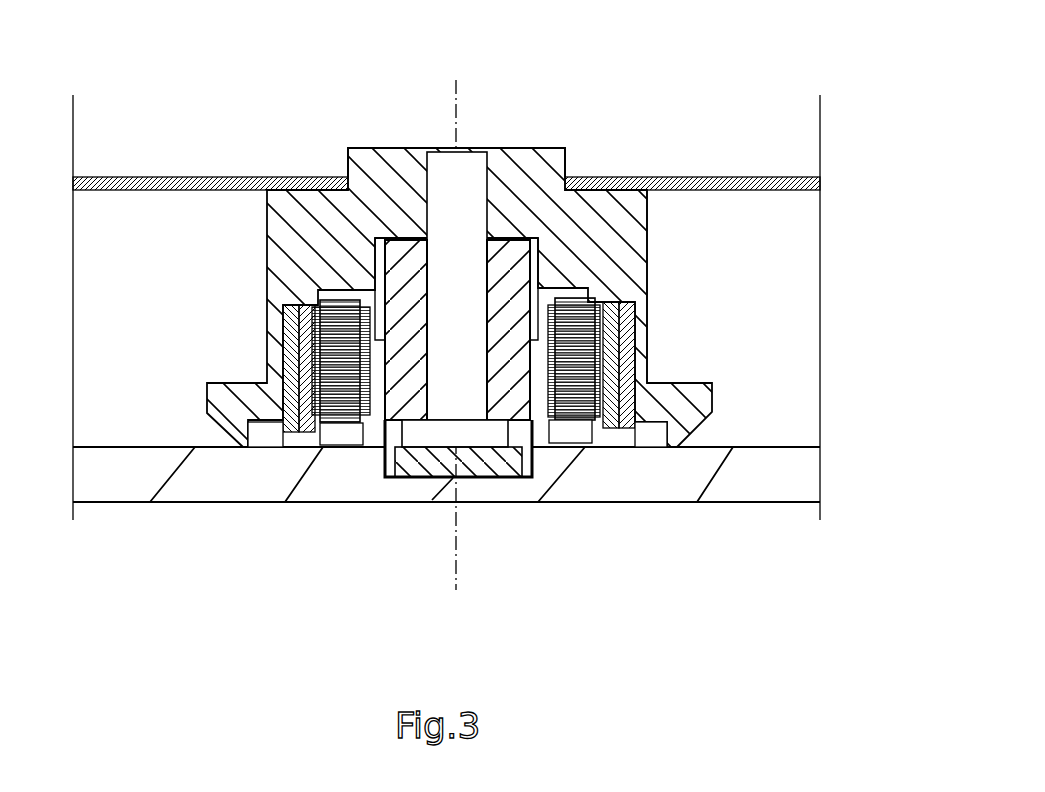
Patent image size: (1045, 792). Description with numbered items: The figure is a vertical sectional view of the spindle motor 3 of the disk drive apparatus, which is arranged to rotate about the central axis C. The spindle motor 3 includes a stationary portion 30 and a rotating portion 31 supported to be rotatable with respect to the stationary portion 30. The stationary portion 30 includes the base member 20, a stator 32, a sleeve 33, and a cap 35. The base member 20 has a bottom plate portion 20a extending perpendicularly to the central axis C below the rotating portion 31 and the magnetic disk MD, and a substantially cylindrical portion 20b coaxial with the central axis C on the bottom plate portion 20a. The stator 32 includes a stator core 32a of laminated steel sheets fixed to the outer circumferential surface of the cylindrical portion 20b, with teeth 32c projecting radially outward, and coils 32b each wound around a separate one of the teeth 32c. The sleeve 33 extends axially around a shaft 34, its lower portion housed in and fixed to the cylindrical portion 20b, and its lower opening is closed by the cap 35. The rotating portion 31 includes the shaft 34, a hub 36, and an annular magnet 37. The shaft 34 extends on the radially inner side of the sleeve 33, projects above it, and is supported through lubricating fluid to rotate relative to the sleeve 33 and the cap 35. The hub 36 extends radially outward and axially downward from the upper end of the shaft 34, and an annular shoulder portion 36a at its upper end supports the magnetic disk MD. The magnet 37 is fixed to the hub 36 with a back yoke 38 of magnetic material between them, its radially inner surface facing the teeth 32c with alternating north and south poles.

The spindle motor 3 is at (724, 65).
The central axis C is at (458, 90).
The magnetic disk MD is at (762, 175).
The base member 20 is at (766, 488).
The bottom plate portion 20a is at (110, 488).
The cylindrical portion 20b is at (382, 403).
The stationary portion 30 is at (378, 478).
The rotating portion 31 is at (660, 260).
The stator 32 is at (624, 475).
The stator core 32a is at (612, 433).
The coils 32b is at (572, 405).
The teeth 32c is at (586, 405).
The sleeve 33 is at (526, 440).
The shaft 34 is at (443, 173).
The cap 35 is at (492, 479).
The hub 36 is at (265, 243).
The shoulder portion 36a is at (570, 172).
The magnet 37 is at (306, 433).
The back yoke 38 is at (290, 433).